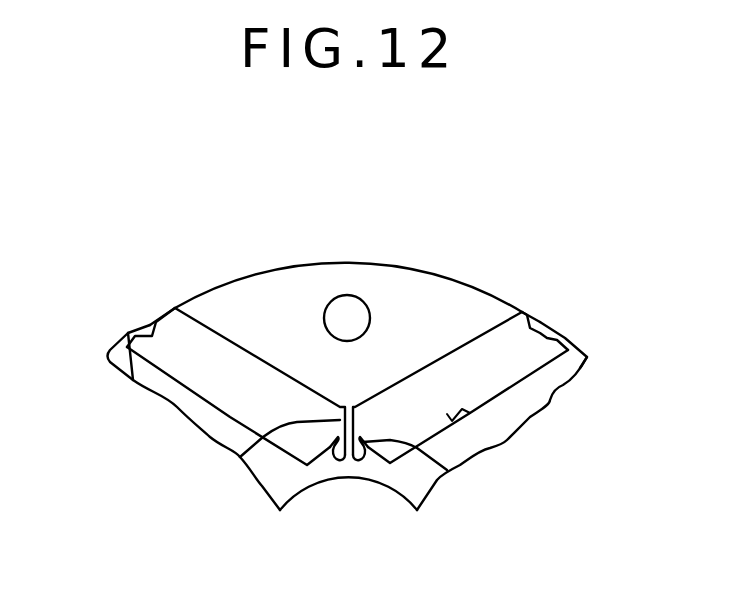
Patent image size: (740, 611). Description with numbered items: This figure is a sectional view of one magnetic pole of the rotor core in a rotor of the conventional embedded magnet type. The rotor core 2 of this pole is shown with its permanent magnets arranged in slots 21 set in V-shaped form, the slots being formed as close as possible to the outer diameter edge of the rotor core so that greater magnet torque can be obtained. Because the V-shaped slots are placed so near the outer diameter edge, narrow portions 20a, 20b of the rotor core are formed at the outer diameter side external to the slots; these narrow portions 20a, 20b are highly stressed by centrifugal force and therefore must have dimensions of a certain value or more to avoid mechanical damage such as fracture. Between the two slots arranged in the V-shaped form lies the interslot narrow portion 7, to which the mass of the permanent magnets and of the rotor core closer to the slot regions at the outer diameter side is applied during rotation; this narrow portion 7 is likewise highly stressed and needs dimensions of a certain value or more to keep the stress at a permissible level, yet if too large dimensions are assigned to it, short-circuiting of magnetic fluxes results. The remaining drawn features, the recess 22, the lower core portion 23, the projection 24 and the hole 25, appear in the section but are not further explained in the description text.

The body 2 is at (430, 290).
The narrow portion between the slots 7 is at (240, 457).
The narrow portion 20a is at (125, 330).
The narrow portion 20b is at (153, 322).
The arm 21 is at (497, 300).
The arc-shaped recess 22 is at (352, 483).
The lower portion 23 is at (447, 472).
The projection 24 is at (470, 413).
The hole 25 is at (327, 310).